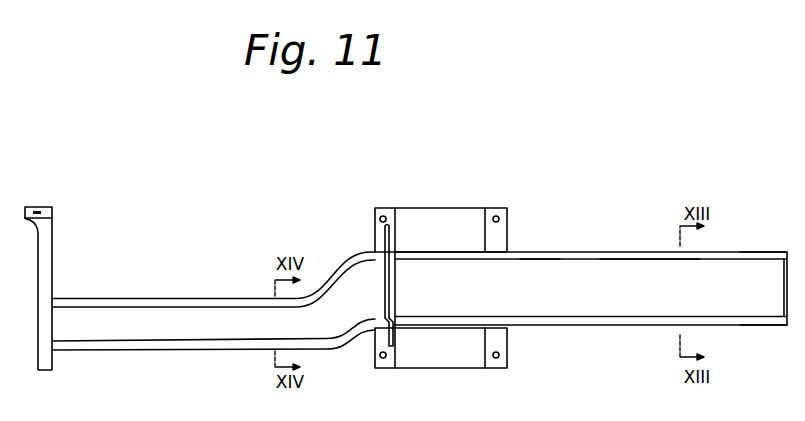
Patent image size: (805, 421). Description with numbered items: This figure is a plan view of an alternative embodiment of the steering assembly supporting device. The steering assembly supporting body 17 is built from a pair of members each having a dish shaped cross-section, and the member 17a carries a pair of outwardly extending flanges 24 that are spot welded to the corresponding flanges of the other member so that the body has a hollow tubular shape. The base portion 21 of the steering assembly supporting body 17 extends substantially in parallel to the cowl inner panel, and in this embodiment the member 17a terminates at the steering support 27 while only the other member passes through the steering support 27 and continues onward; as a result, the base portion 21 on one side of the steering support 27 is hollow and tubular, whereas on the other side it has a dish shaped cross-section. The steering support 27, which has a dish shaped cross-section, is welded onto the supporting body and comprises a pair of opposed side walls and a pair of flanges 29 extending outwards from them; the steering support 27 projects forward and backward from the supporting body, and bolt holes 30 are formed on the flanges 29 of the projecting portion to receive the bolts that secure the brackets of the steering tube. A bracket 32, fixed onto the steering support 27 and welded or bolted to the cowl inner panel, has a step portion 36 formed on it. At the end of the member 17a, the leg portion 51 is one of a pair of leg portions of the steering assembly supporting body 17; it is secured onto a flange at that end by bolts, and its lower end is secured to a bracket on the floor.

The leg portion 51 is at (52, 262).
The bracket 32 is at (385, 277).
The step portion 36 is at (396, 300).
The steering support 27 is at (460, 360).
The flanges 29 is at (375, 240).
The bolt holes 30 is at (384, 216).
The base portion 21 is at (582, 265).
The member 17a is at (632, 265).
The steering assembly supporting body 17 is at (529, 244).
The flanges 24 is at (757, 252).